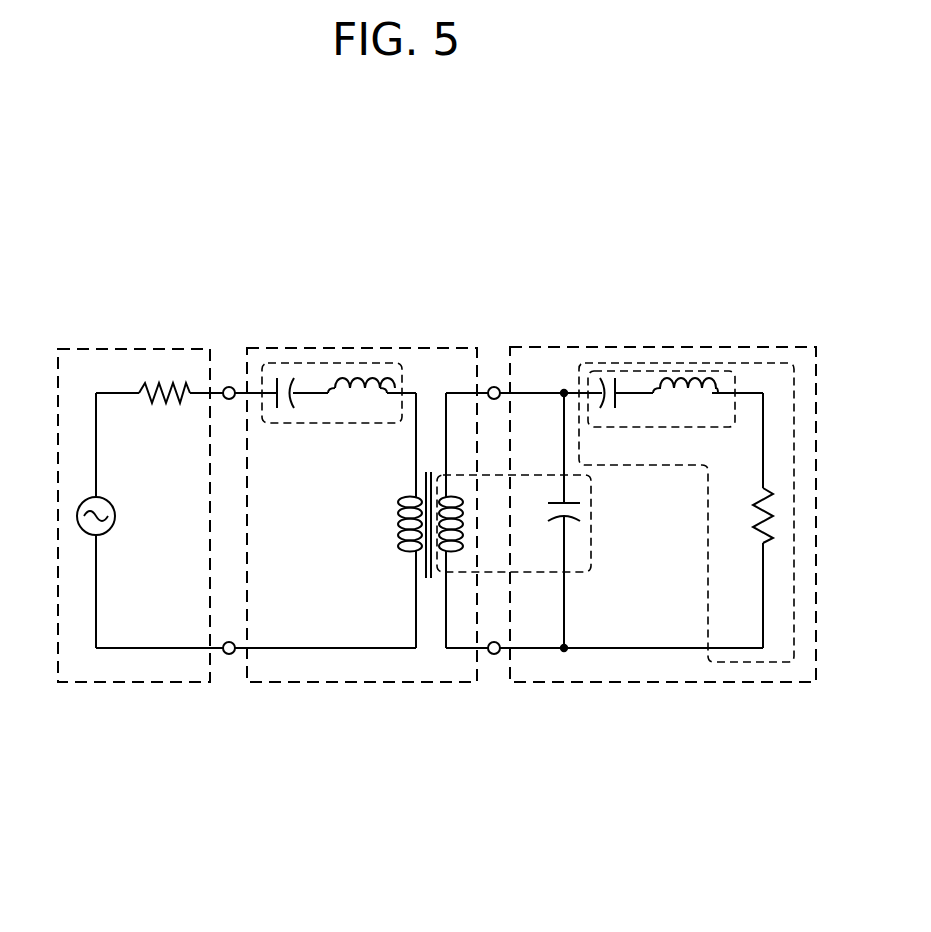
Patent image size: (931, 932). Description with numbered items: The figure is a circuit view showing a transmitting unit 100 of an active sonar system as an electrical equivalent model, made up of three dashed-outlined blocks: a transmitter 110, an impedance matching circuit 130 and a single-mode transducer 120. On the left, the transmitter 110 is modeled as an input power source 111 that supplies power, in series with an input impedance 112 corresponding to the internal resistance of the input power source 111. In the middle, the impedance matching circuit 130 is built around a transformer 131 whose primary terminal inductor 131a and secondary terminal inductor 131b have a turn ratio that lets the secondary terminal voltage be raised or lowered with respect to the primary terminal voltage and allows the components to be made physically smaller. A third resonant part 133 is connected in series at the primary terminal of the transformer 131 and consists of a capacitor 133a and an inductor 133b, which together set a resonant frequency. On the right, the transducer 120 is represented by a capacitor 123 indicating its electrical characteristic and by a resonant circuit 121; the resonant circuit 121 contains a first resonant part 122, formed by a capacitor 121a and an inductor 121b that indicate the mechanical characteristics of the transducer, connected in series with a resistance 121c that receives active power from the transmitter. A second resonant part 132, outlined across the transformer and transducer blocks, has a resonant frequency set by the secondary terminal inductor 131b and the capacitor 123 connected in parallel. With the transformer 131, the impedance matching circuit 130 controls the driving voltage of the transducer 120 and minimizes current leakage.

The transmitting unit 100 is at (478, 298).
The transmitter 110 is at (117, 348).
The input power source 111 is at (123, 520).
The input impedance 112 is at (166, 418).
The transducer 120 is at (557, 346).
The resonant circuit 121 is at (735, 362).
The capacitor 121a is at (617, 419).
The inductor 121b is at (695, 419).
The resistance 121c is at (731, 520).
The first resonant part 122 is at (654, 370).
The capacitor 123 is at (596, 520).
The impedance matching circuit 130 is at (417, 347).
The transformer 131 is at (355, 733).
The primary terminal inductor 131a is at (402, 550).
The secondary terminal inductor 131b is at (453, 552).
The second resonant part 132 is at (578, 572).
The third resonant part 133 is at (301, 362).
The capacitor 133a is at (290, 419).
The inductor 133b is at (364, 419).